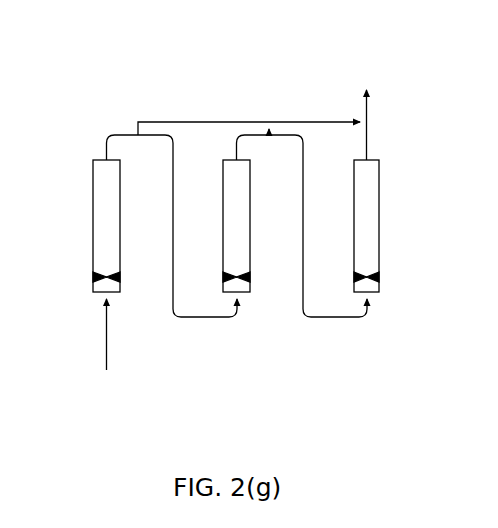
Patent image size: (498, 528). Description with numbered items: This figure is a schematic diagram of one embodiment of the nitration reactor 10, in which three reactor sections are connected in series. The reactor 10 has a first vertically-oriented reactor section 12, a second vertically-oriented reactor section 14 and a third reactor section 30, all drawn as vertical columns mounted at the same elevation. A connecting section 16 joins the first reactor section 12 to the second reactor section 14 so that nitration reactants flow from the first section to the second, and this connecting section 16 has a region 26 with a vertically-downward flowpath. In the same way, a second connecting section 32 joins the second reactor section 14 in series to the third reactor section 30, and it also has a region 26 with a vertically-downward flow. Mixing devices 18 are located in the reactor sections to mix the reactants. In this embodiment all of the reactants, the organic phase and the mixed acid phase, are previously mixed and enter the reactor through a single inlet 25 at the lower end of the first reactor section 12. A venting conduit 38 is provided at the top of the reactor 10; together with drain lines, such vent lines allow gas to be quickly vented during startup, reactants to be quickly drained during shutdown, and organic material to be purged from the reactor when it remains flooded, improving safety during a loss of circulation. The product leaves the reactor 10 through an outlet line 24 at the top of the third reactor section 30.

The nitration reactor 10 is at (238, 70).
The first vertically-oriented reactor section 12 is at (96, 189).
The second vertically-oriented reactor section 14 is at (238, 252).
The third reactor section 30 is at (380, 160).
The connecting section 16 is at (117, 135).
The mixing device 18 is at (111, 277).
The product outlet line 24 is at (369, 100).
The inlet 25 is at (106, 328).
The region with a vertically-downward flowpath 26 is at (173, 223).
The second connecting section 32 is at (285, 122).
The venting conduit 38 is at (198, 122).